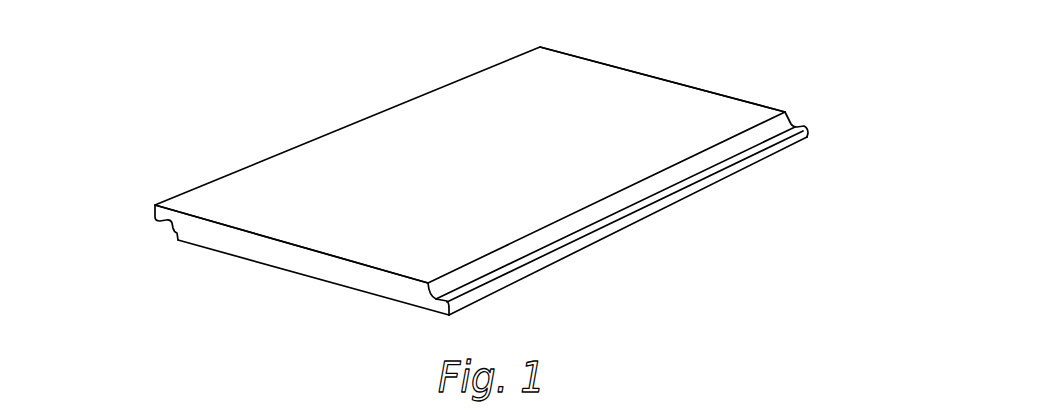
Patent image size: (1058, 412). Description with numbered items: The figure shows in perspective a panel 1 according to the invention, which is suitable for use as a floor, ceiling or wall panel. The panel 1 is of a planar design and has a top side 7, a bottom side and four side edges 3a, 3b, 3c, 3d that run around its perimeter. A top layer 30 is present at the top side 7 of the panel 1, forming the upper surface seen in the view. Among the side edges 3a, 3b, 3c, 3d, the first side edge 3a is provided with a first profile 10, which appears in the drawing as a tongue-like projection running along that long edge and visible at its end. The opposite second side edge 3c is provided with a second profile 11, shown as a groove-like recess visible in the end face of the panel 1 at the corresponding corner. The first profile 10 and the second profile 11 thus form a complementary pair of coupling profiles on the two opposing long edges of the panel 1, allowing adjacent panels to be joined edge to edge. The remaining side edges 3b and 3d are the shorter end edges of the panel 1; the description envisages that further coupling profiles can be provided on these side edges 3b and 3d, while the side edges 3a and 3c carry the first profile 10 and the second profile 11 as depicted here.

The panel 1 is at (258, 113).
The top side 7 is at (387, 140).
The top layer 30 is at (499, 172).
The first side edge 3a is at (817, 138).
The side edge 3b is at (277, 288).
The second side edge 3c is at (143, 232).
The side edge 3d is at (668, 77).
The first profile 10 is at (625, 217).
The second profile 11 is at (153, 220).